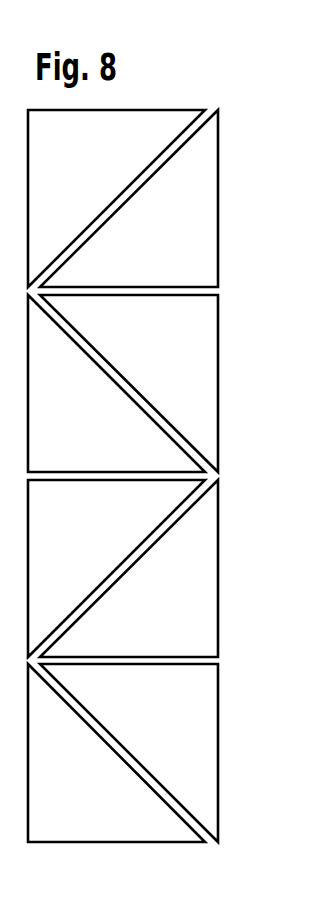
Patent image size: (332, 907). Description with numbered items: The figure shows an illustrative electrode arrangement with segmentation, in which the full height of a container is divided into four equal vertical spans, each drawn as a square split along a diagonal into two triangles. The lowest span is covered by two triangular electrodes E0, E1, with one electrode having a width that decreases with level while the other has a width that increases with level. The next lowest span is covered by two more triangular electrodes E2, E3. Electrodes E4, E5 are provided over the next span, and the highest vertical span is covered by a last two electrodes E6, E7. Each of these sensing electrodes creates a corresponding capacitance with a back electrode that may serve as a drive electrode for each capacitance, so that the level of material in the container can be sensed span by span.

The triangular electrode E0 is at (116, 753).
The triangular electrode E1 is at (129, 753).
The triangular electrode E2 is at (129, 568).
The triangular electrode E3 is at (116, 568).
The electrode E4 is at (116, 383).
The electrode E5 is at (129, 383).
The electrode E6 is at (129, 198).
The electrode E7 is at (116, 198).